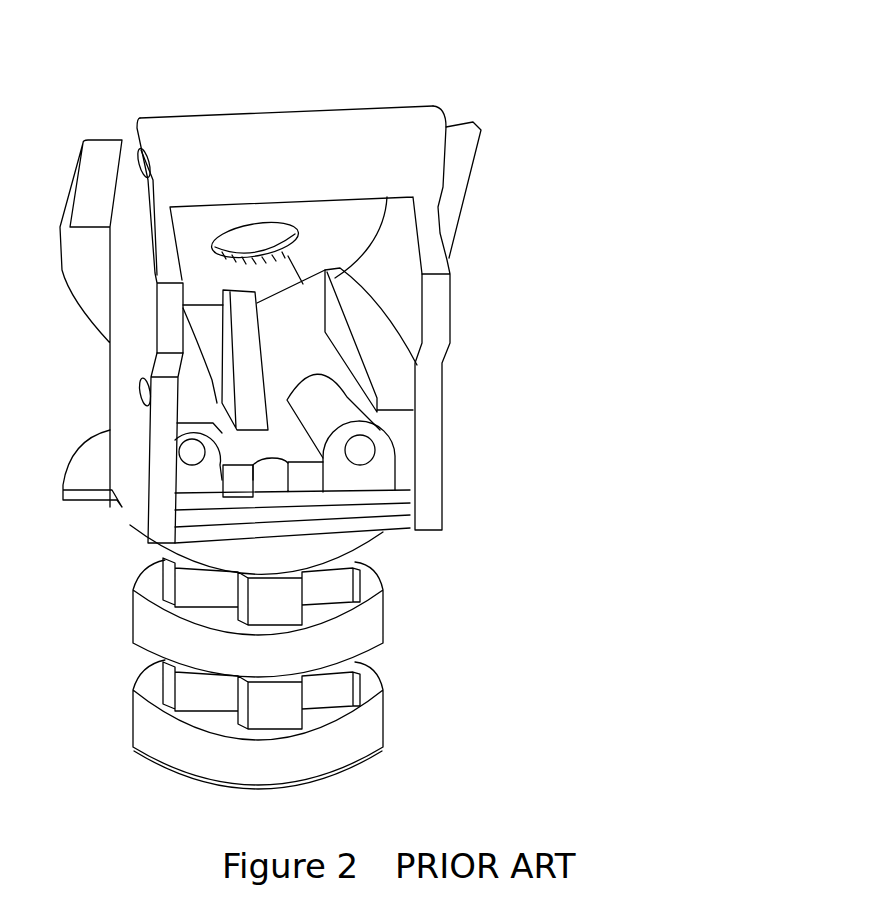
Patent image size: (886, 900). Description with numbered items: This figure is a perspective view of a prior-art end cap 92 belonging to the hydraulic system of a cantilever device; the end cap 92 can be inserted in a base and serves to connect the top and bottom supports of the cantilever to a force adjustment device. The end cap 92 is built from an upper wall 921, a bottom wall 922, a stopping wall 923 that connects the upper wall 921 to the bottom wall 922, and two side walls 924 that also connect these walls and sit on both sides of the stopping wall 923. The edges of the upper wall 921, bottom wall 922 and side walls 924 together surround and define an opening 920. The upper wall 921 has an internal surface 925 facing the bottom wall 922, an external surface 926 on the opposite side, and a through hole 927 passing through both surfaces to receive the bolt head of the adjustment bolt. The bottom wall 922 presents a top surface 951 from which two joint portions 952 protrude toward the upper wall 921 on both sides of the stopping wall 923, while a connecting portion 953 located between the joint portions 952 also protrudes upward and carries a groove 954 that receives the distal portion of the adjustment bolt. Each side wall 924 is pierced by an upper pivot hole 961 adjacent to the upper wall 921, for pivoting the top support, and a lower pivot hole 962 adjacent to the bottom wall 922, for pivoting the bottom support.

The end cap 92 is at (458, 132).
The opening 920 is at (352, 228).
The upper wall 921 is at (198, 220).
The internal surface 925 is at (255, 240).
The bottom wall 922 is at (380, 512).
The stopping wall 923 is at (247, 345).
The side wall 924 is at (123, 352).
The external surface 926 is at (286, 107).
The through hole 927 is at (312, 262).
The top surface 951 is at (390, 497).
The joint portion 952 is at (187, 435).
The connecting portion 953 is at (235, 455).
The groove 954 is at (267, 478).
The upper pivot hole 961 is at (140, 153).
The lower pivot hole 962 is at (150, 397).